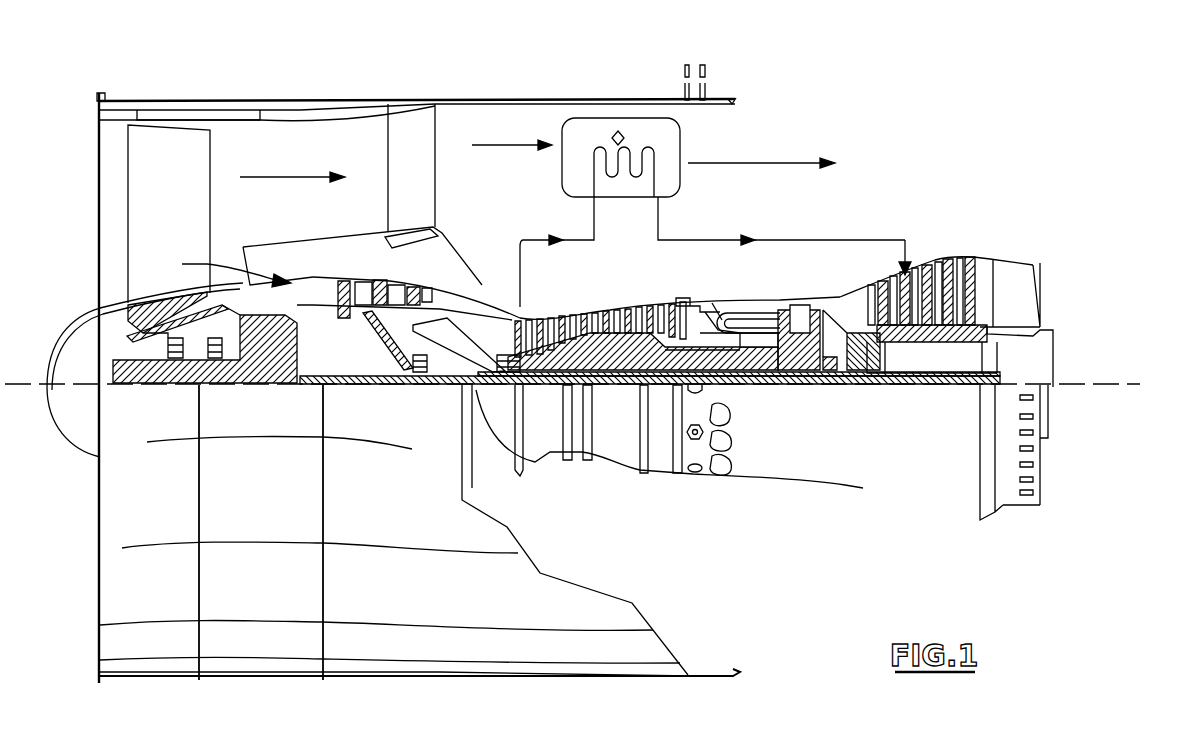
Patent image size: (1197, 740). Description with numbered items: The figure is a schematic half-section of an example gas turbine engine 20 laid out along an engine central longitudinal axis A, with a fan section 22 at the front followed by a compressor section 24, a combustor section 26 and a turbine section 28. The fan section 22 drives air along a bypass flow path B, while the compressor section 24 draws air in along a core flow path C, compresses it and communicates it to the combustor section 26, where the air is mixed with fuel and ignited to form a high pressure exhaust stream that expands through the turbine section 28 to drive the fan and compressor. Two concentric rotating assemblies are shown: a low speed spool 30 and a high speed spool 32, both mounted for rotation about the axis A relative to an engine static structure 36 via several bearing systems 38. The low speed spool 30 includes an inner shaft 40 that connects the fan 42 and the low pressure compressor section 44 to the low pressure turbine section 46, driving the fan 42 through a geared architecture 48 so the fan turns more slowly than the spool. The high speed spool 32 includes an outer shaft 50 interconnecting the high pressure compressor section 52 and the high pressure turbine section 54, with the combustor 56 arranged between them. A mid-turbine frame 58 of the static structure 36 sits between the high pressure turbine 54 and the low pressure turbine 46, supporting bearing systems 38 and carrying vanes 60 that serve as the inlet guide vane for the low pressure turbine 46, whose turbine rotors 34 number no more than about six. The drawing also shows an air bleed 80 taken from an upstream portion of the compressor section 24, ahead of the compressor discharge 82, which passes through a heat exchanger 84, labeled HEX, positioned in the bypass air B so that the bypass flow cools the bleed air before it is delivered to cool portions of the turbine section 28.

The gas turbine engine 20 is at (740, 153).
The fan section 22 is at (308, 68).
The compressor section 24 is at (725, 213).
The combustor section 26 is at (730, 213).
The turbine section 28 is at (833, 213).
The low speed spool 30 is at (618, 454).
The high speed spool 32 is at (660, 360).
The turbine rotors 34 is at (942, 343).
The engine static structure 36 is at (659, 480).
The bearing systems 38 is at (415, 377).
The inner shaft 40 is at (493, 470).
The fan 42 is at (180, 228).
The low pressure compressor section 44 is at (412, 290).
The low pressure turbine section 46 is at (930, 278).
The geared architecture 48 is at (288, 365).
The outer shaft 50 is at (752, 368).
The high pressure compressor section 52 is at (605, 352).
The high pressure turbine section 54 is at (806, 302).
The combustor 56 is at (740, 326).
The mid-turbine frame 58 is at (838, 286).
The vanes 60 is at (840, 318).
The air bleed 80 is at (519, 295).
The discharge 82 is at (686, 300).
The heat exchanger 84 is at (585, 133).
The heat exchanger HEX is at (618, 131).
The engine central longitudinal axis A is at (1130, 384).
The bypass flow path B is at (290, 177).
The core flow path C is at (226, 268).